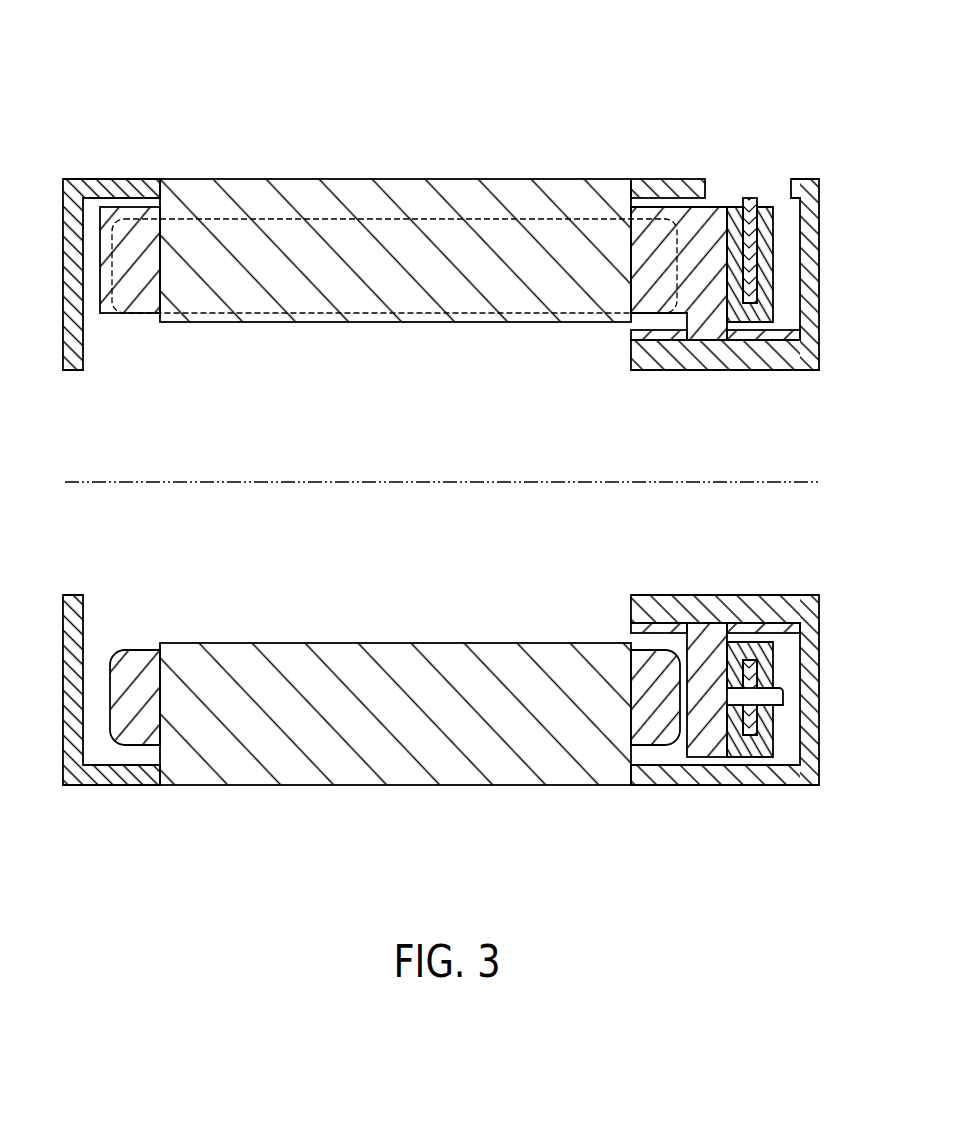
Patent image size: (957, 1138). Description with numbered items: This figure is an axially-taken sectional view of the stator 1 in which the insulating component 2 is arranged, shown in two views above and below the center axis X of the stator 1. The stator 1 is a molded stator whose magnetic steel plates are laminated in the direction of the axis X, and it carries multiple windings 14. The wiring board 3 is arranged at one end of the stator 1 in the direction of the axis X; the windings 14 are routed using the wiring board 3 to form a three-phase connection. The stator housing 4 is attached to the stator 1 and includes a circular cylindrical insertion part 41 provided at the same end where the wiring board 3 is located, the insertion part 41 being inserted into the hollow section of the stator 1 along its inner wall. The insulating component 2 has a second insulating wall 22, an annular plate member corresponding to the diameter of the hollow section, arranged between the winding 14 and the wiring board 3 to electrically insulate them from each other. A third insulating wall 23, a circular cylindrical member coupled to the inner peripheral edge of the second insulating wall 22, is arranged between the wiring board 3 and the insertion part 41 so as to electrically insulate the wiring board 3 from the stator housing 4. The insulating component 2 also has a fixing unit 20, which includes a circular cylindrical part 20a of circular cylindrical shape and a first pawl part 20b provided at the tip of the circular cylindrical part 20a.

The stator 1 is at (593, 111).
The insulating component 2 is at (751, 403).
The wiring board 3 is at (762, 213).
The stator housing 4 is at (725, 482).
The winding 14 is at (650, 250).
The fixing unit 20 is at (776, 556).
The circular cylindrical part 20a is at (732, 698).
The first pawl part 20b is at (780, 702).
The second insulating wall 22 is at (715, 250).
The third insulating wall 23 is at (788, 336).
The insertion part 41 is at (701, 365).
The axis X is at (799, 483).